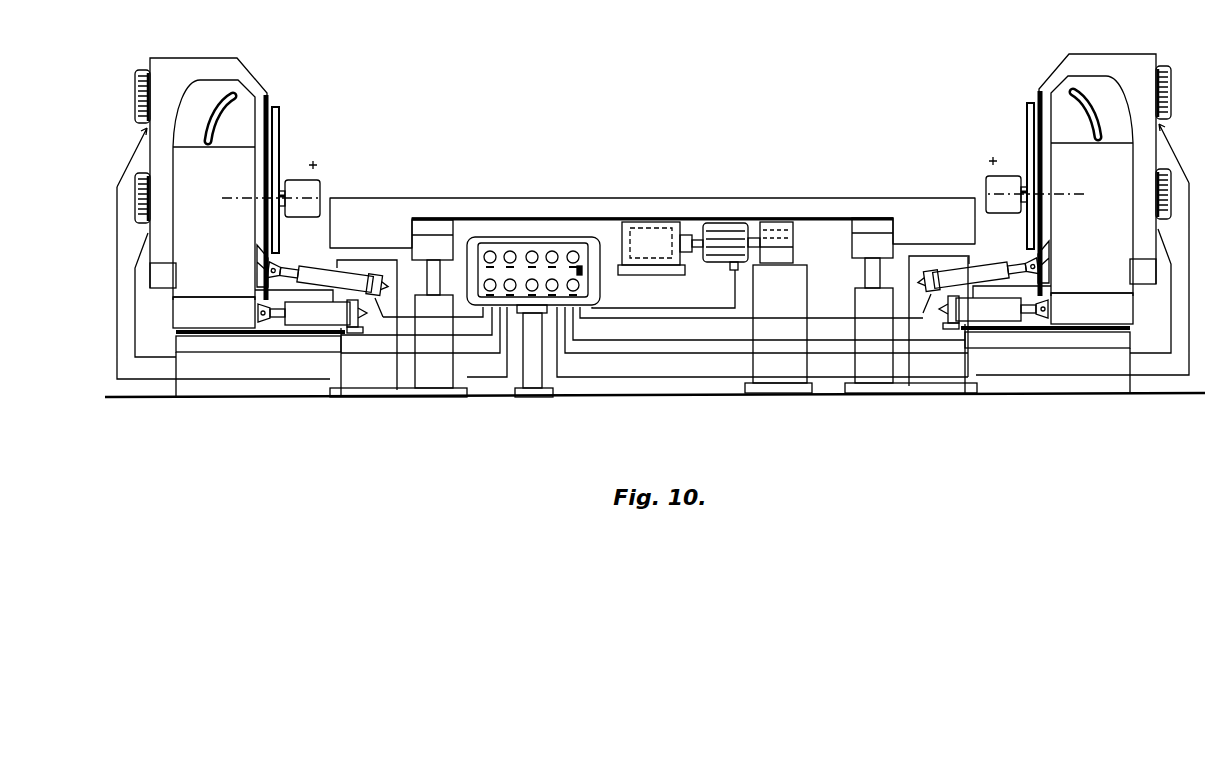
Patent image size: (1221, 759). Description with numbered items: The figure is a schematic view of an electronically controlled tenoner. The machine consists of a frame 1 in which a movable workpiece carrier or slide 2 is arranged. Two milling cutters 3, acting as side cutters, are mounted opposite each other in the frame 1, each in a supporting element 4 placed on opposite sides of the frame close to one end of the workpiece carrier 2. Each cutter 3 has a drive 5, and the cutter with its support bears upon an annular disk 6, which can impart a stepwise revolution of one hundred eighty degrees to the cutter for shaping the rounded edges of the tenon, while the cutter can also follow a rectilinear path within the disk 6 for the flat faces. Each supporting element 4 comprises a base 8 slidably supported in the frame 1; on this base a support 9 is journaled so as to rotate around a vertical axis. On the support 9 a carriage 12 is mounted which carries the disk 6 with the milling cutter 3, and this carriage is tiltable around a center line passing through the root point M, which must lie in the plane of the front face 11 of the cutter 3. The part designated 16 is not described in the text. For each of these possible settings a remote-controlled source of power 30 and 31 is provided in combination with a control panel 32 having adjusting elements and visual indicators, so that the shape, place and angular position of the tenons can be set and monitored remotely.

The frame 1 is at (413, 413).
The workpiece carrier 2 is at (570, 200).
The milling cutter 3 is at (317, 184).
The supporting element 4 is at (655, 175).
The drive 5 is at (144, 179).
The annular disk 6 is at (278, 130).
The base 8 is at (233, 343).
The support 9 is at (222, 305).
The front face 11 is at (329, 190).
The carriage 12 is at (185, 80).
The head body 16 is at (245, 198).
The remote-controlled source of power 30 is at (298, 320).
The remote-controlled source of power 31 is at (318, 268).
The control panel 32 is at (540, 247).
The point of intersection M is at (313, 165).